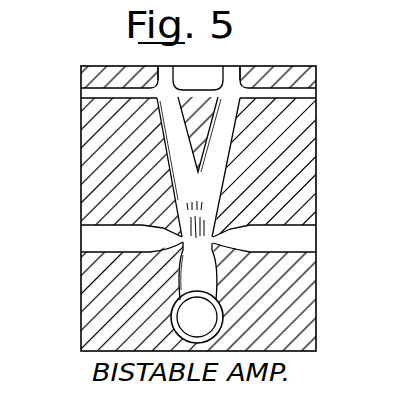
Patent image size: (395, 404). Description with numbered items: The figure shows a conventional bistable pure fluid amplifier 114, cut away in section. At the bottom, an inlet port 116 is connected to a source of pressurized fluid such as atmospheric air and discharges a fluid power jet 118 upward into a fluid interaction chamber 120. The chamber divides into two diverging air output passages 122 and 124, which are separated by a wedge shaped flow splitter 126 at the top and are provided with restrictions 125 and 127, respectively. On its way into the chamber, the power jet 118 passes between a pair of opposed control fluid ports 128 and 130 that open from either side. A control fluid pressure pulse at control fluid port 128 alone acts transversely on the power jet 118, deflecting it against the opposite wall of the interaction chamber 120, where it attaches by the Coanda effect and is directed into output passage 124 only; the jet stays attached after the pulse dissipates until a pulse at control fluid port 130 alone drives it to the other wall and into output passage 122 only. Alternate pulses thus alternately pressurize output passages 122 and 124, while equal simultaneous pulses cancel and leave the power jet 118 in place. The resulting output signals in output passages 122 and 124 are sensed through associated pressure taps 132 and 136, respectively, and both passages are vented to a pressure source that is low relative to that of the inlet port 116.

The bistable fluid amplifier 114 is at (317, 140).
The inlet port 116 is at (211, 328).
The fluid power jet 118 is at (188, 218).
The fluid interaction chamber 120 is at (212, 195).
The output passage 122 is at (160, 127).
The output passage 124 is at (227, 157).
The restriction 125 is at (158, 67).
The wedge shaped flow splitter 126 is at (209, 87).
The restriction 127 is at (238, 67).
The control fluid port 128 is at (157, 240).
The control fluid port 130 is at (238, 240).
The pressure tap 132 is at (108, 95).
The pressure tap 136 is at (255, 93).